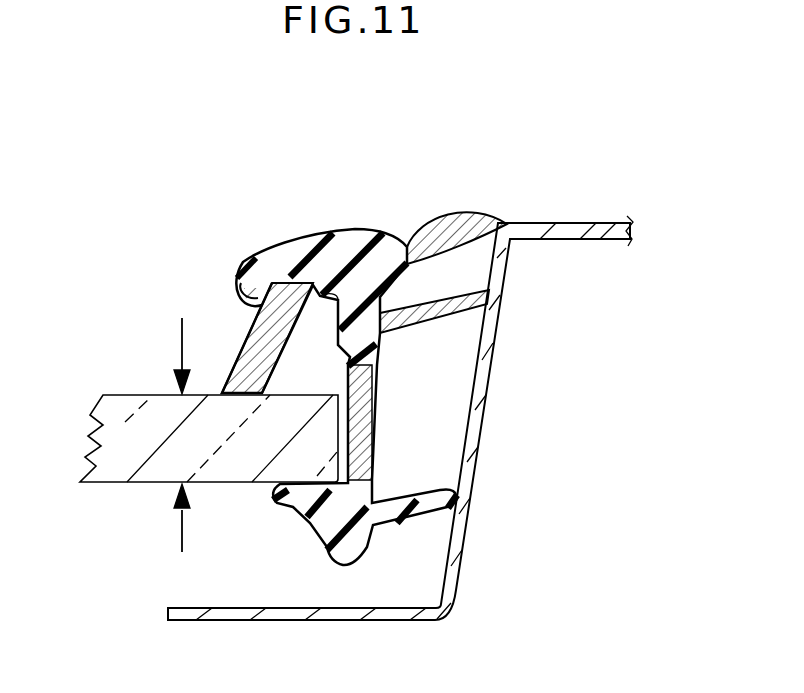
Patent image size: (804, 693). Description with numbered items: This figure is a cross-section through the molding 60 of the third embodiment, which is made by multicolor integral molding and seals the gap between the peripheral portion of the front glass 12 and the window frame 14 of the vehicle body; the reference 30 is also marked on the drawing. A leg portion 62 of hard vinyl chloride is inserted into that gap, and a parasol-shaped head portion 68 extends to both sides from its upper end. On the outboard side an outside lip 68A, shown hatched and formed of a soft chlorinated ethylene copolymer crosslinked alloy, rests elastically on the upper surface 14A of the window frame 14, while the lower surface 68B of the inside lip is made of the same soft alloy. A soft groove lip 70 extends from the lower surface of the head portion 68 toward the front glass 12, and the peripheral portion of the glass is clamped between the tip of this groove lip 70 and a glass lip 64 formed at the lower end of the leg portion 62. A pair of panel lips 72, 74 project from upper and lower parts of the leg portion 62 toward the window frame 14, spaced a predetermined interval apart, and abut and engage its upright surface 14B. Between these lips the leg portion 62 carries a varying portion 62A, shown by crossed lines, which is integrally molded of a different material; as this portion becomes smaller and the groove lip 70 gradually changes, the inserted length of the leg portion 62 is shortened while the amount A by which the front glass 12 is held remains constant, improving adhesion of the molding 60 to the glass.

The front glass 12 is at (143, 395).
The window frame 14 is at (400, 437).
The upper surface of the window frame 14A is at (553, 232).
The upright surface of the window frame 14B is at (480, 407).
The clip assembly 30 is at (611, 213).
The molding 60 is at (483, 202).
The leg portion 62 is at (380, 337).
The varying portion 62A is at (365, 440).
The glass lip 64 is at (296, 512).
The head portion 68 is at (362, 233).
The outside lip 68A is at (497, 223).
The lower surface of inside lip 68B is at (240, 300).
The groove lip 70 is at (250, 340).
The panel lip 72 is at (470, 315).
The panel lip 74 is at (447, 507).
The amount by which the front glass is held A is at (178, 528).